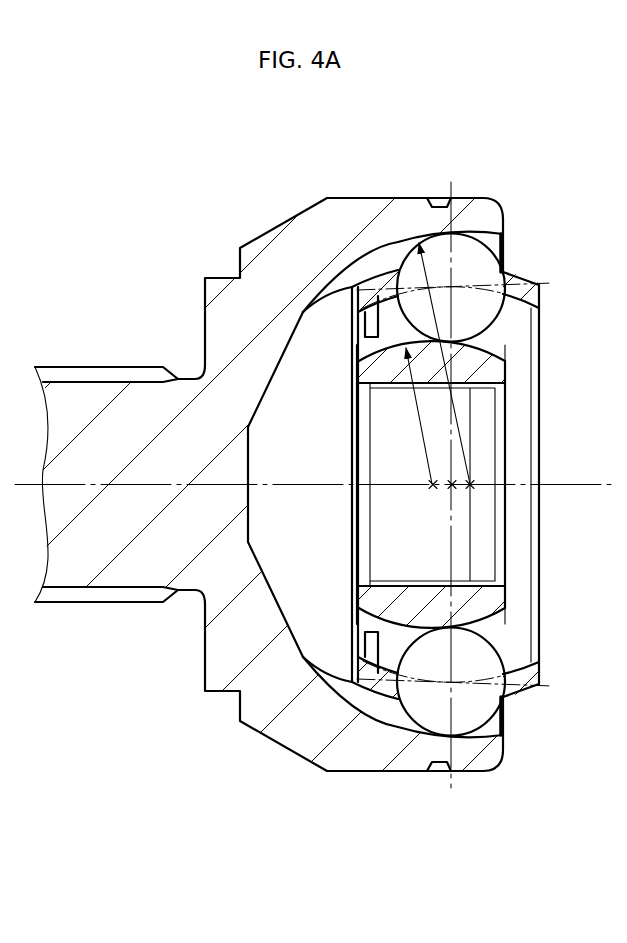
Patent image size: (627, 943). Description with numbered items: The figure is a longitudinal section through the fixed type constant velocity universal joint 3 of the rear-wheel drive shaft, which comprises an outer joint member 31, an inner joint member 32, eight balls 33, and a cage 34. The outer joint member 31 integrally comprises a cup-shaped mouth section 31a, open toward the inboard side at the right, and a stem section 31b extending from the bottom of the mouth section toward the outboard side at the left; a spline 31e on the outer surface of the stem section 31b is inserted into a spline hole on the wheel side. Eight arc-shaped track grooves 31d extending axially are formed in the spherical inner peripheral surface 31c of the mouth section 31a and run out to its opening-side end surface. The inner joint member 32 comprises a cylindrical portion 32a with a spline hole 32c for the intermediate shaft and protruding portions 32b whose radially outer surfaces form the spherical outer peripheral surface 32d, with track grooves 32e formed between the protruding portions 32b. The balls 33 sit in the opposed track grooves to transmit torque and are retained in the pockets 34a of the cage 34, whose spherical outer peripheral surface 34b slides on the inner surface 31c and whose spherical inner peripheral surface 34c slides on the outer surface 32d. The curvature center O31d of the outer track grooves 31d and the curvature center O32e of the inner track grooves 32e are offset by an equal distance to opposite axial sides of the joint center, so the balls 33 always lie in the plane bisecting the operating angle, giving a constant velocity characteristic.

The fixed type constant velocity universal joint 3 is at (530, 163).
The outer joint member 31 is at (274, 226).
The mouth section 31a is at (417, 208).
The stem section 31b is at (80, 553).
The spherical inner peripheral surface 31c is at (353, 263).
The track grooves 31d is at (377, 252).
The spline 31e is at (94, 378).
The inner joint member 32 is at (491, 367).
The cylindrical portion 32a is at (488, 600).
The protruding portions 32b is at (507, 320).
The spline hole 32c is at (390, 385).
The spherical outer peripheral surface 32d is at (390, 680).
The track grooves 32e is at (362, 330).
The balls 33 is at (468, 253).
The cage 34 is at (543, 284).
The pockets 34a is at (500, 270).
The spherical outer peripheral surface 34b is at (522, 695).
The spherical inner peripheral surface 34c is at (500, 663).
The curvature center of the track grooves of the outer joint member O31d is at (471, 483).
The curvature center of the track grooves of the inner joint member O32e is at (432, 487).